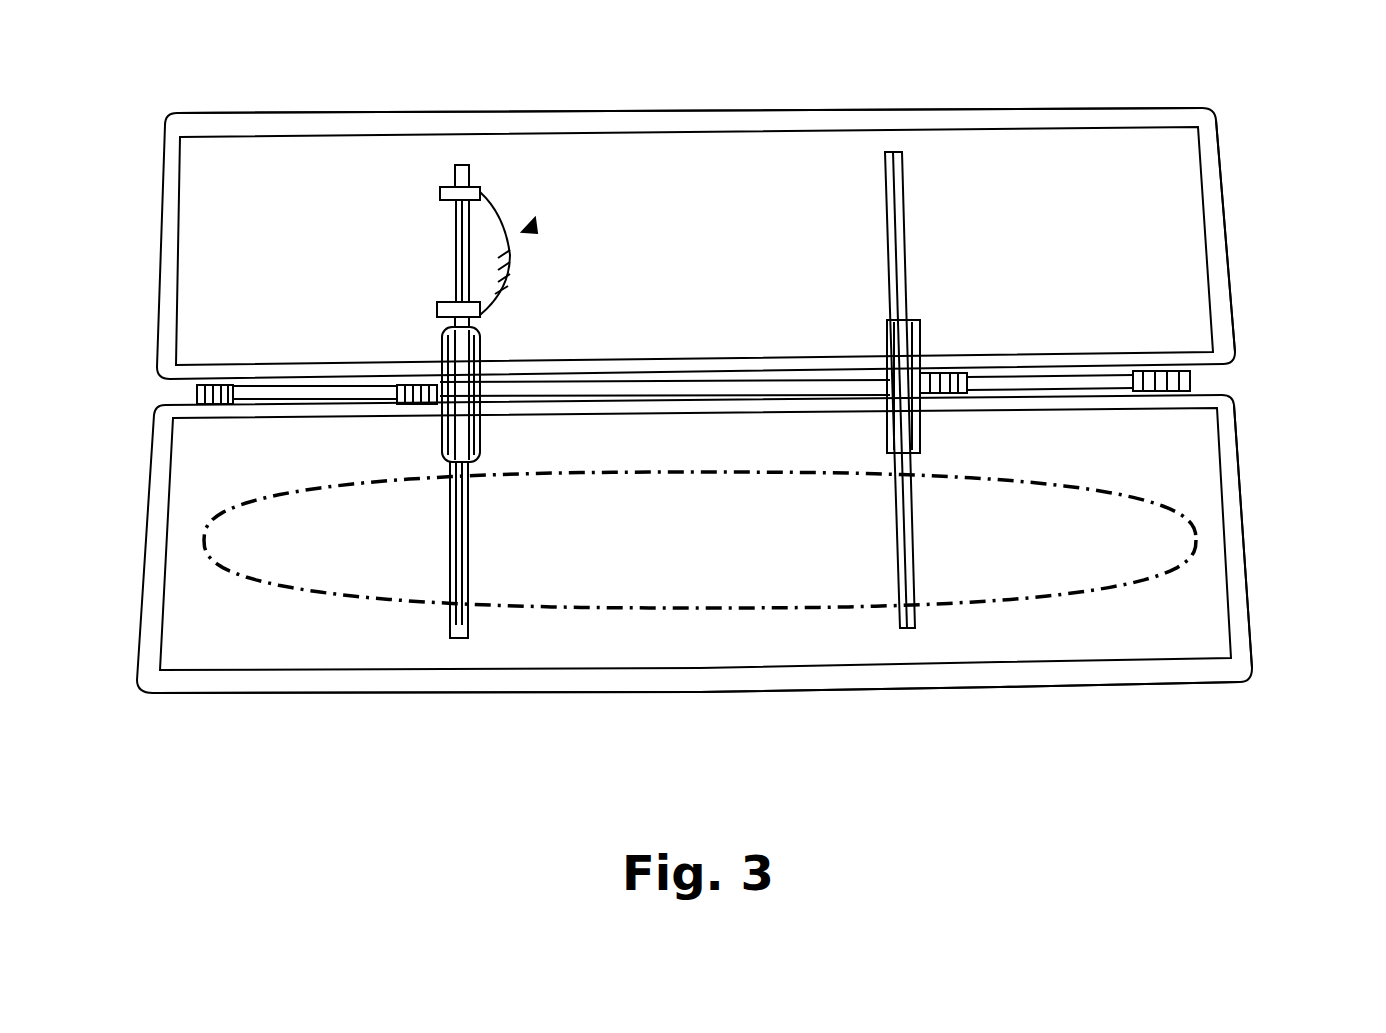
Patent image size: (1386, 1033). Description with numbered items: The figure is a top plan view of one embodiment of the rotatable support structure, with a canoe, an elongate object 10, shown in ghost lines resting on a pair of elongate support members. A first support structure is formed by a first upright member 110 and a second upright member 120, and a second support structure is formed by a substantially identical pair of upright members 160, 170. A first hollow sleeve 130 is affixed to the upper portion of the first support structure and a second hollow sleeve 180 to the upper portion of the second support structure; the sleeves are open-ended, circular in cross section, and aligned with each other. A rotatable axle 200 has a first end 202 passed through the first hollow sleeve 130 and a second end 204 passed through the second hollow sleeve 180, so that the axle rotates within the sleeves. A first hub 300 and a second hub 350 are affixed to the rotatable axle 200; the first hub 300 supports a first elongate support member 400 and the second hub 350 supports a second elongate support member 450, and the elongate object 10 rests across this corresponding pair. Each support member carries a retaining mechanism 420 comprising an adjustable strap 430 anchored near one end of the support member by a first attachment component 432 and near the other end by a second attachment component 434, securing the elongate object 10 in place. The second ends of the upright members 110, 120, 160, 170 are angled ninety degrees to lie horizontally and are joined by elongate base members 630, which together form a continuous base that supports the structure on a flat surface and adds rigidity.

The elongate object 10 is at (345, 602).
The first upright member 110 is at (163, 232).
The second upright member 120 is at (138, 641).
The first hollow sleeve 130 is at (226, 385).
The upright member of second support structure 160 is at (1240, 492).
The upright member of second support structure 170 is at (1233, 247).
The second hollow sleeve 180 is at (945, 374).
The rotatable axle 200 is at (695, 382).
The first end of rotatable axle 202 is at (320, 386).
The second end of rotatable axle 204 is at (1048, 376).
The first hub 300 is at (472, 405).
The second hub 350 is at (890, 407).
The first elongate support member 400 is at (470, 178).
The retaining mechanism 420 is at (533, 222).
The adjustable strap 430 is at (508, 270).
The first attachment component 432 is at (440, 307).
The second attachment component 434 is at (440, 193).
The second elongate support member 450 is at (890, 196).
The elongate base member 630 is at (712, 108).